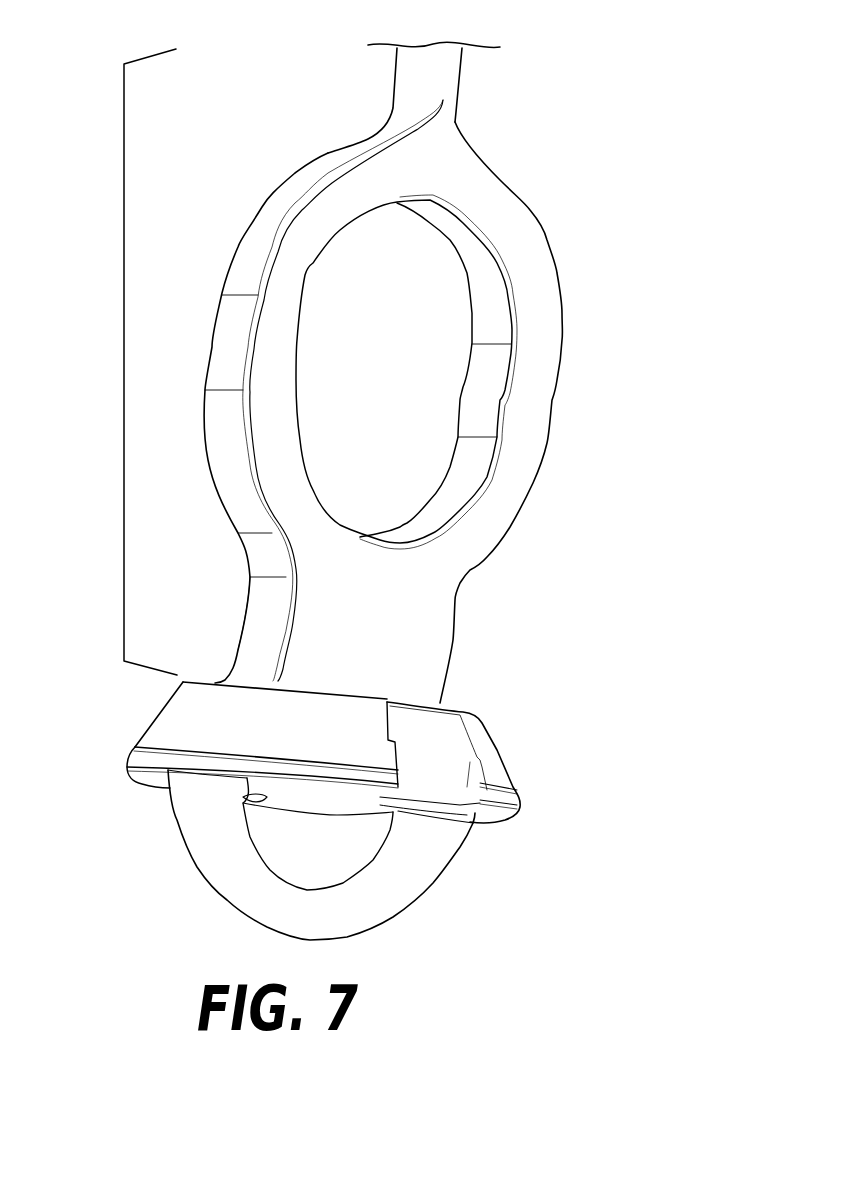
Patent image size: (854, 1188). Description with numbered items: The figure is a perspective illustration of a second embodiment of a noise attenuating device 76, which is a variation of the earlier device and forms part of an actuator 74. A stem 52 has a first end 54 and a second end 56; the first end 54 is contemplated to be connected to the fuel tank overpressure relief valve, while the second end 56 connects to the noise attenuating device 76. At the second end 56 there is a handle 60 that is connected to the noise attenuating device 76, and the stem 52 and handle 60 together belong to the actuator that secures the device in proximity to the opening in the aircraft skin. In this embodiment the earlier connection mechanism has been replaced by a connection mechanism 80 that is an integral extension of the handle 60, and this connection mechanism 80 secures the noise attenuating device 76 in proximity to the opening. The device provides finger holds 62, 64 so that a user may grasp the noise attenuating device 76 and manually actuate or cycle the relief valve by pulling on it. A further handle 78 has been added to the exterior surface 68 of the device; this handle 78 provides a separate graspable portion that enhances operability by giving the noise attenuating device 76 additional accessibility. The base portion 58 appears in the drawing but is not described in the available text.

The stem 52 is at (413, 75).
The first end 54 is at (455, 53).
The second end 56 is at (455, 103).
The base plate 58 is at (160, 732).
The handle 60 is at (203, 418).
The finger hold 62 is at (257, 803).
The finger hold 64 is at (443, 745).
The exterior surface 68 is at (340, 803).
The actuator 74 is at (124, 355).
The noise attenuating device 76 is at (127, 802).
The handle 78 is at (437, 863).
The connection mechanism 80 is at (255, 617).